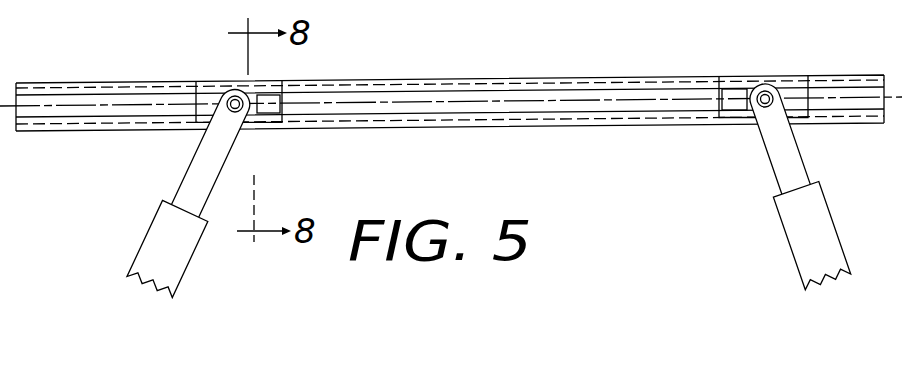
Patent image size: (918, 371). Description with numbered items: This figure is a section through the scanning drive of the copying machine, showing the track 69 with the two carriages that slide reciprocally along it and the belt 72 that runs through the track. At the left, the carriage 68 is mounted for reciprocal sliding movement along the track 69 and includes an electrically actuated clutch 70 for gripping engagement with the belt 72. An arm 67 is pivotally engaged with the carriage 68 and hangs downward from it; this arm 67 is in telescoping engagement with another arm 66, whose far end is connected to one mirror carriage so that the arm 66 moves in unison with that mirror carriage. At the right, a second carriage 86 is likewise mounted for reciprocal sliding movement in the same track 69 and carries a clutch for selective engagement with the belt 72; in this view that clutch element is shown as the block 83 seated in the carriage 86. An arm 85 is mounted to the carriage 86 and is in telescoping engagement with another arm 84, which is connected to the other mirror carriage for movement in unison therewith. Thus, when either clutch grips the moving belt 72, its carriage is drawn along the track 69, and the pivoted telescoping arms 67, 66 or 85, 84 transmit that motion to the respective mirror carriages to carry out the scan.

The arm 66 is at (141, 235).
The arm 67 is at (189, 168).
The carriage 68 is at (206, 94).
The track 69 is at (116, 82).
The electrically actuated clutch 70 is at (262, 93).
The belt 72 is at (486, 101).
The block 83 is at (736, 92).
The arm 84 is at (803, 260).
The arm 85 is at (770, 168).
The carriage 86 is at (793, 92).